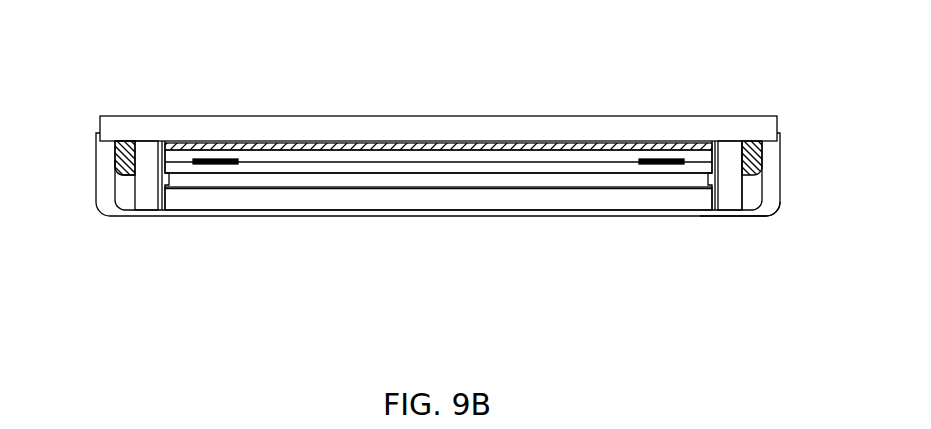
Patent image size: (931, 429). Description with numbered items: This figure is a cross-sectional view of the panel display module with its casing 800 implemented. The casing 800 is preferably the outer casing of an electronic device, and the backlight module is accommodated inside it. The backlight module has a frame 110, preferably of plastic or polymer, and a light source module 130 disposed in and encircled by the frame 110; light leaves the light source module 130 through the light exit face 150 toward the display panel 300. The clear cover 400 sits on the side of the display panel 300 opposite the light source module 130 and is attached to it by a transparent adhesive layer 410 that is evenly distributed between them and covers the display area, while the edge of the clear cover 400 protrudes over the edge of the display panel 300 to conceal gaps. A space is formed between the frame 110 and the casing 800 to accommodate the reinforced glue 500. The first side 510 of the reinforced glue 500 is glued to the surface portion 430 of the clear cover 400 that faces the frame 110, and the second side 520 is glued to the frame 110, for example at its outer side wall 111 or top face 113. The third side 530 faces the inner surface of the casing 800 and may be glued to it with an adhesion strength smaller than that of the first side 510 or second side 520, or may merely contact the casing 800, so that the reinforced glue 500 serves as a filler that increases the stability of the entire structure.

The frame 110 is at (728, 200).
The outer side wall 111 is at (749, 187).
The top face 113 is at (710, 182).
The light source module 130 is at (425, 200).
The light exit face 150 is at (348, 185).
The display panel 300 is at (275, 162).
The clear cover 400 is at (663, 127).
The transparent adhesive layer 410 is at (483, 143).
The surface portion 430 is at (770, 145).
The reinforced glue 500 is at (117, 165).
The first side 510 is at (129, 133).
The second side 520 is at (145, 160).
The third side 530 is at (112, 150).
The casing 800 is at (743, 190).